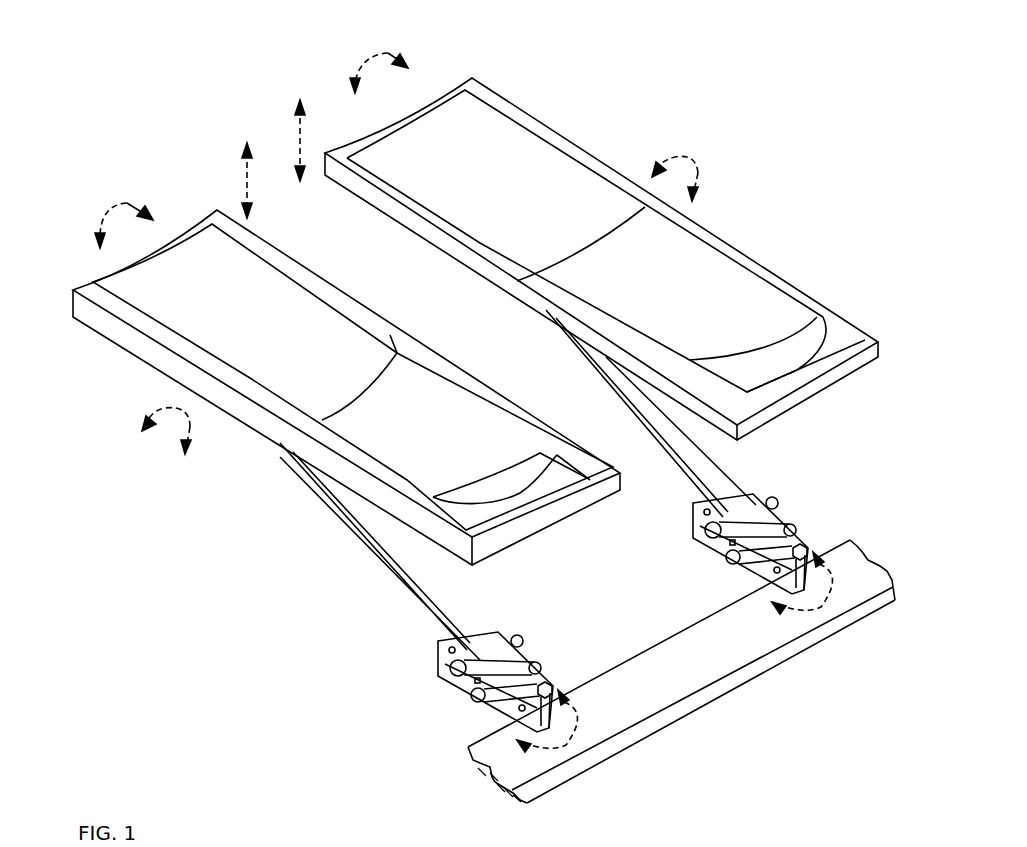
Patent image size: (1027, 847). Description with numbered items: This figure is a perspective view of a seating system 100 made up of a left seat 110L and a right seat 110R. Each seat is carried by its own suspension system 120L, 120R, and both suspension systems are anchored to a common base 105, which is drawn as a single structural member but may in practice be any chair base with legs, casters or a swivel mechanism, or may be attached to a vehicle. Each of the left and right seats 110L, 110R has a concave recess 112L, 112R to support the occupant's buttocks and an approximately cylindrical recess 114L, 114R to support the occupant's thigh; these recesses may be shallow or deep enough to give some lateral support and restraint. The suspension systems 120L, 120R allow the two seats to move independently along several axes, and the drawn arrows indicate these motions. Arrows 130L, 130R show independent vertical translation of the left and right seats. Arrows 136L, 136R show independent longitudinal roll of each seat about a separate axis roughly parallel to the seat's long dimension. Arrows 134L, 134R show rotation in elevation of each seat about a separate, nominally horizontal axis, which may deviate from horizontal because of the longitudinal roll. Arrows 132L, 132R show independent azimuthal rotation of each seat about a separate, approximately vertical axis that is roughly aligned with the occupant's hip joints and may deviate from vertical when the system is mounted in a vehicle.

The seating system 100 is at (86, 41).
The base 105 is at (603, 765).
The left seat 110L is at (512, 556).
The right seat 110R is at (785, 417).
The concave recess 112L is at (420, 445).
The concave recess 112R is at (687, 287).
The cylindrical recess 114L is at (233, 340).
The cylindrical recess 114R is at (527, 167).
The left suspension system 120L is at (353, 540).
The right suspension system 120R is at (765, 465).
The arrow 130L is at (242, 163).
The arrow 130R is at (297, 125).
The arrow 132L is at (573, 723).
The arrow 132R is at (823, 563).
The arrow 134L is at (190, 427).
The arrow 134R is at (698, 173).
The arrow 136L is at (127, 203).
The arrow 136R is at (388, 53).